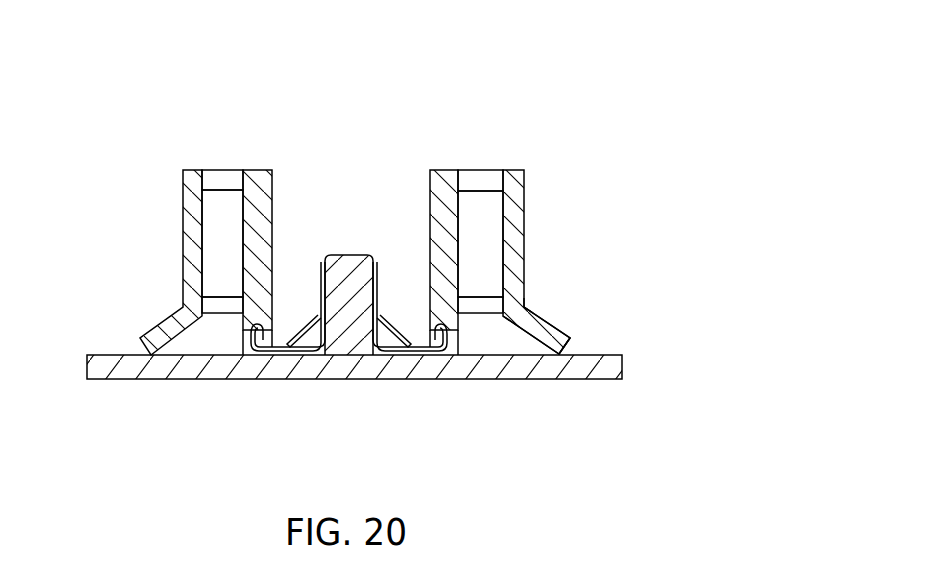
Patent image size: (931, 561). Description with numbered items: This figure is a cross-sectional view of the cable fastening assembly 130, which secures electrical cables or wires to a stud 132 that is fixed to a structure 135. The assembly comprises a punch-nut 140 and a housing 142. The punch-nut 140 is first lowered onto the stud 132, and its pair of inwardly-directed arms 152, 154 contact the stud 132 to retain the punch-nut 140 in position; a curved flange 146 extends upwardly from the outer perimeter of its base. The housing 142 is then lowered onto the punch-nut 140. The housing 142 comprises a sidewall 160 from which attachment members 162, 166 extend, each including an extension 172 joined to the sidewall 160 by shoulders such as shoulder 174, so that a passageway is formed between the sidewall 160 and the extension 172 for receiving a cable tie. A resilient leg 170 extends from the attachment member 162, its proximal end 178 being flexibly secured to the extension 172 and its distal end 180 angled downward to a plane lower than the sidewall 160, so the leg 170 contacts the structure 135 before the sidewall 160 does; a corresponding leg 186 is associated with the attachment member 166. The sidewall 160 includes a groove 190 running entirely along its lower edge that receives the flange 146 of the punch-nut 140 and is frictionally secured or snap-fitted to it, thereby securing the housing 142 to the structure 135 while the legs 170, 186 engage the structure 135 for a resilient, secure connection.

The cable fastening assembly 130 is at (652, 97).
The stud 132 is at (338, 262).
The structure 135 is at (612, 366).
The punch-nut 140 is at (417, 352).
The housing 142 is at (437, 190).
The curved flange 146 is at (253, 350).
The inwardly-directed arm 152 is at (266, 322).
The inwardly-directed arm 154 is at (405, 318).
The sidewall 160 is at (272, 223).
The attachment member 162 is at (492, 180).
The attachment member 166 is at (216, 186).
The resilient leg 170 is at (566, 337).
The extension 172 is at (525, 267).
The shoulder 174 is at (487, 307).
The proximal end 178 is at (528, 307).
The distal end 180 is at (568, 343).
The leg 186 is at (150, 335).
The groove 190 is at (293, 322).